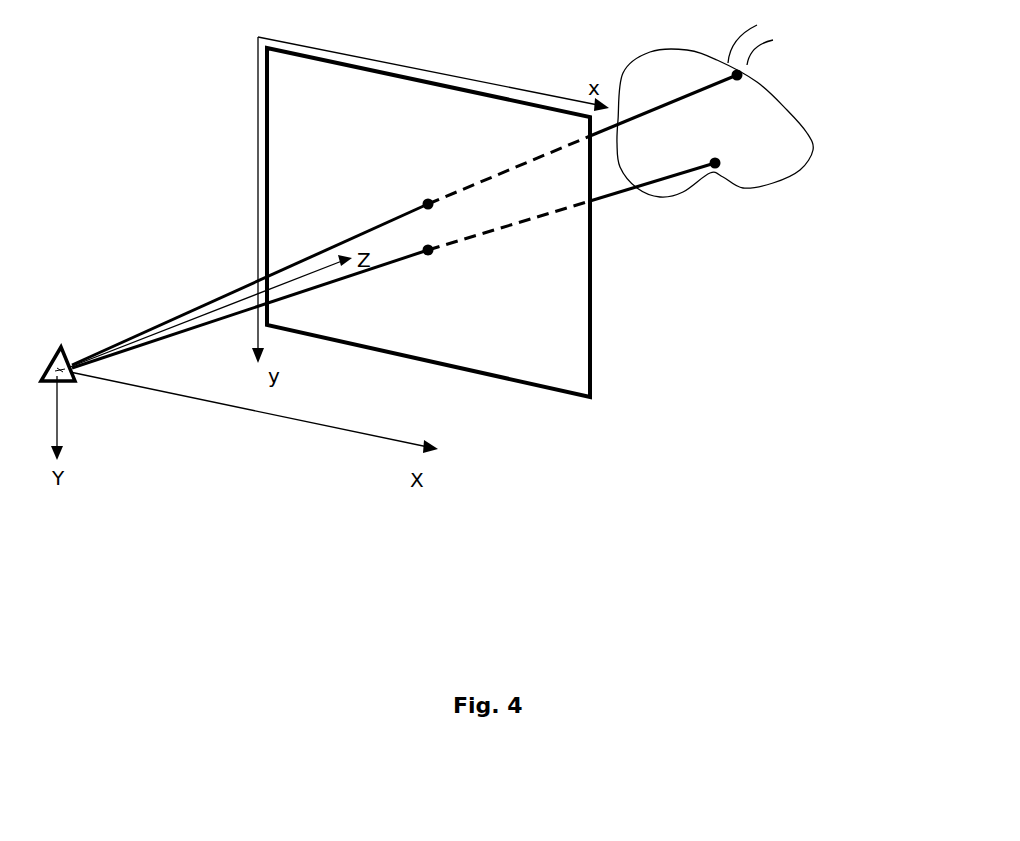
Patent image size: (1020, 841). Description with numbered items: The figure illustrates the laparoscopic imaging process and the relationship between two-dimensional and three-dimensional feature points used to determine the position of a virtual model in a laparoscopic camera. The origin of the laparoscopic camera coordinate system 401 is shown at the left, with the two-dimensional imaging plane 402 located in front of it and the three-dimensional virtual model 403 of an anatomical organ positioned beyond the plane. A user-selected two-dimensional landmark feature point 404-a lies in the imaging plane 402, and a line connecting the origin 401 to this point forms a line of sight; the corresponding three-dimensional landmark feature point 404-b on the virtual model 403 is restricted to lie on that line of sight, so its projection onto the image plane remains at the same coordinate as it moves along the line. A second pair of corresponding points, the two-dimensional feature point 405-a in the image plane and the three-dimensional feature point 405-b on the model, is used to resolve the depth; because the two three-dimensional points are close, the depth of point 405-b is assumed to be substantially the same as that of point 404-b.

The origin of the laparoscopic camera coordinate system 401 is at (55, 336).
The 2D imaging plane 402 is at (555, 390).
The 3D virtual model 403 is at (818, 162).
The 2D landmark feature point 404-a is at (422, 200).
The 3D landmark feature point 404-b is at (737, 88).
The second 2D feature point 405-a is at (447, 265).
The second 3D feature point 405-b is at (723, 177).